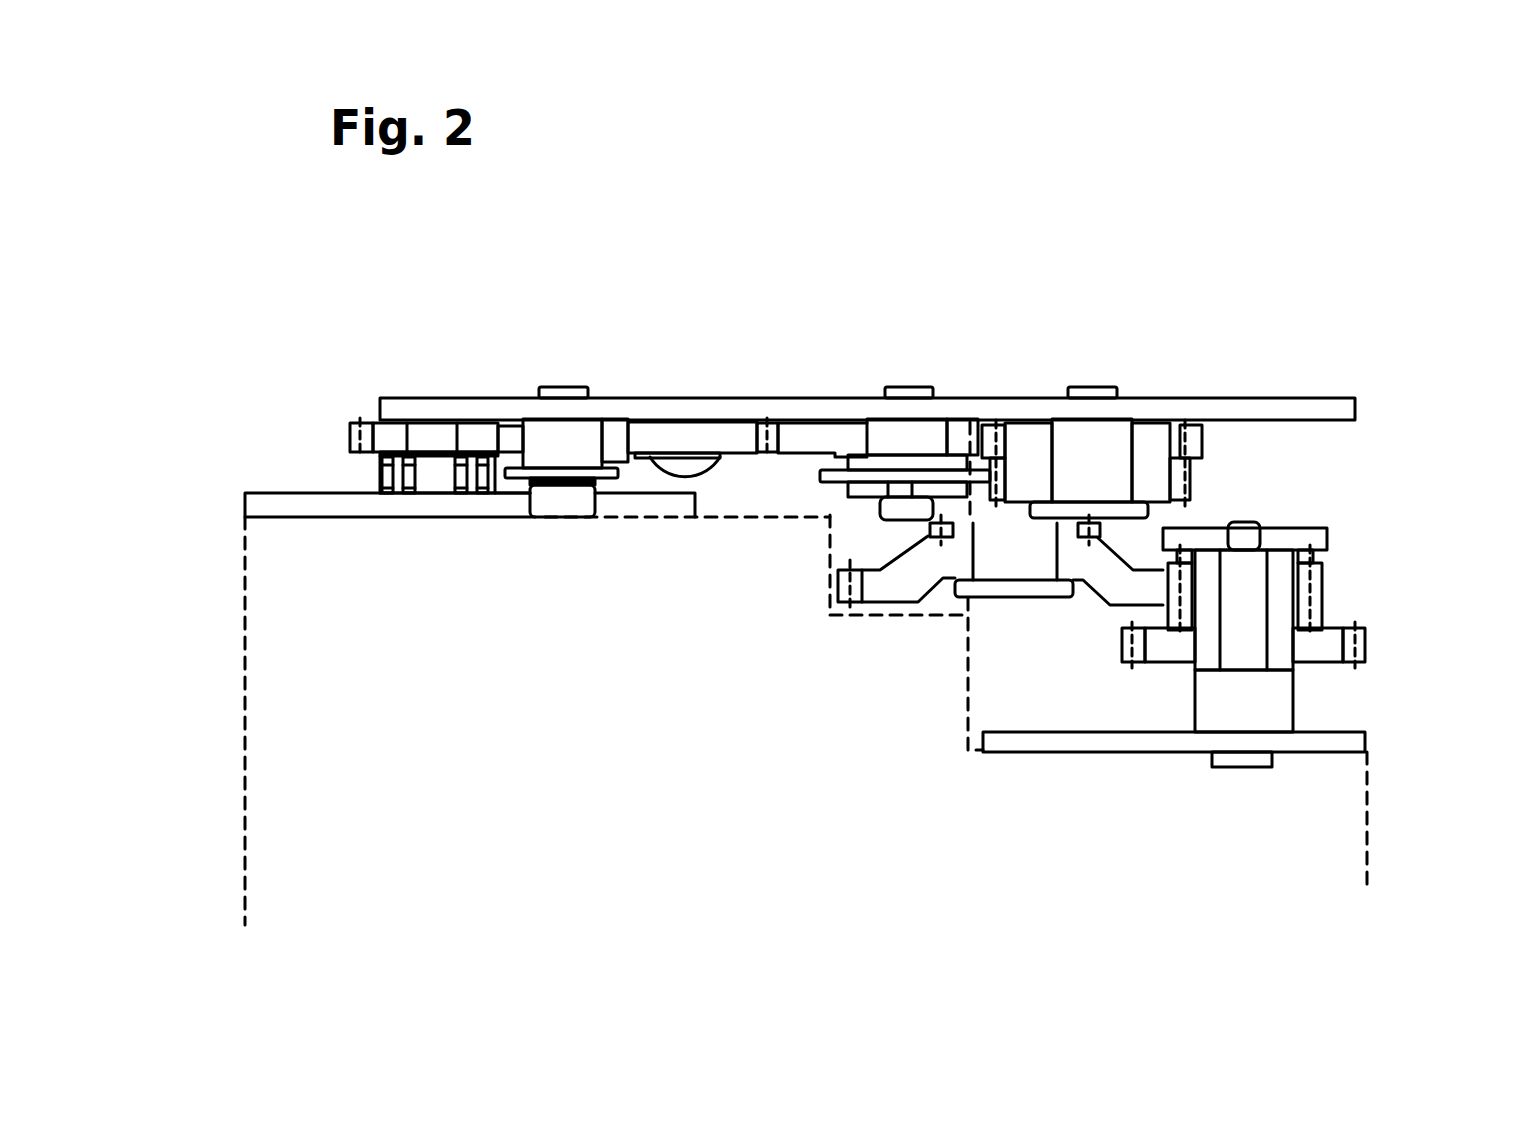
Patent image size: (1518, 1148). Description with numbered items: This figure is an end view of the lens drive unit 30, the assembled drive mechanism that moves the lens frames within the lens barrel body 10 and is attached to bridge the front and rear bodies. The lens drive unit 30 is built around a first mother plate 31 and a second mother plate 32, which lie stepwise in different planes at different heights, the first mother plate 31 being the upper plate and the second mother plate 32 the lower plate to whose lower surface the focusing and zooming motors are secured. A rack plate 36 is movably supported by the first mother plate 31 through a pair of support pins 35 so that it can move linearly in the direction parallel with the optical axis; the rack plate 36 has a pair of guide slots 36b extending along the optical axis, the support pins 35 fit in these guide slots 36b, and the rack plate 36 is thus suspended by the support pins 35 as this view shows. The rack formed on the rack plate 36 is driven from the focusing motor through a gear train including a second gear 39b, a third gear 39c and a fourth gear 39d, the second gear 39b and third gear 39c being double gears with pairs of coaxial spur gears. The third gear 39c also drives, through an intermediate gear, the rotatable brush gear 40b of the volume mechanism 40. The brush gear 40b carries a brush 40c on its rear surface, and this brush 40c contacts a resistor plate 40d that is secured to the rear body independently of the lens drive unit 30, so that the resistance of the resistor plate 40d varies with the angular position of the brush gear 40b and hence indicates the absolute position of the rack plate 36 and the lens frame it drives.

The lens barrel body 10 is at (322, 755).
The lens drive unit 30 is at (1392, 483).
The first mother plate 31 is at (1358, 410).
The second mother plate 32 is at (1340, 746).
The support pins 35 is at (908, 407).
The rack plate 36 is at (842, 475).
The guide slots 36b is at (880, 473).
The second gear 39b is at (1323, 648).
The third gear 39c is at (918, 578).
The fourth gear 39d is at (1088, 405).
The volume mechanism 40 is at (436, 455).
The brush gear 40b is at (660, 440).
The brush 40c is at (408, 452).
The resistor plate 40d is at (480, 505).